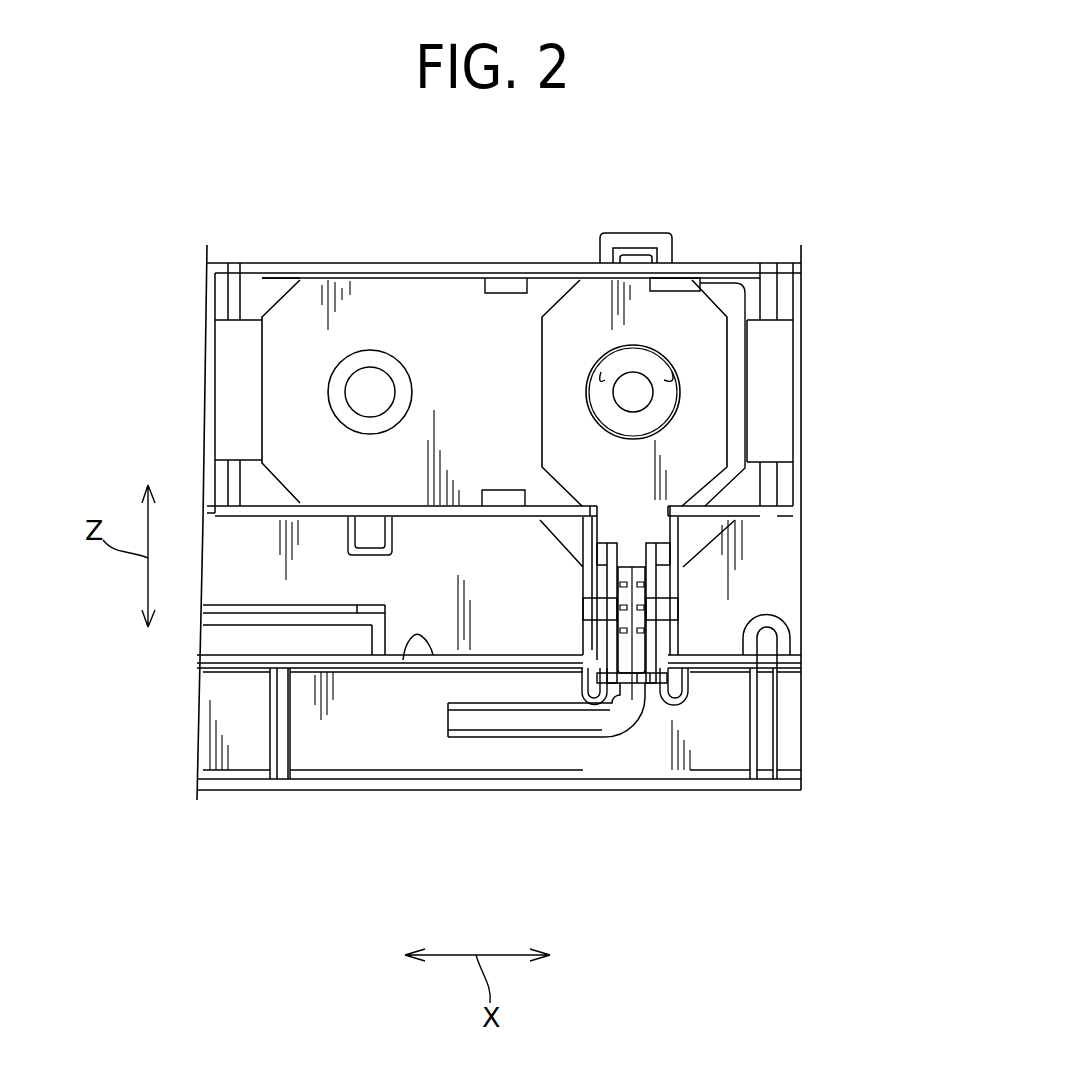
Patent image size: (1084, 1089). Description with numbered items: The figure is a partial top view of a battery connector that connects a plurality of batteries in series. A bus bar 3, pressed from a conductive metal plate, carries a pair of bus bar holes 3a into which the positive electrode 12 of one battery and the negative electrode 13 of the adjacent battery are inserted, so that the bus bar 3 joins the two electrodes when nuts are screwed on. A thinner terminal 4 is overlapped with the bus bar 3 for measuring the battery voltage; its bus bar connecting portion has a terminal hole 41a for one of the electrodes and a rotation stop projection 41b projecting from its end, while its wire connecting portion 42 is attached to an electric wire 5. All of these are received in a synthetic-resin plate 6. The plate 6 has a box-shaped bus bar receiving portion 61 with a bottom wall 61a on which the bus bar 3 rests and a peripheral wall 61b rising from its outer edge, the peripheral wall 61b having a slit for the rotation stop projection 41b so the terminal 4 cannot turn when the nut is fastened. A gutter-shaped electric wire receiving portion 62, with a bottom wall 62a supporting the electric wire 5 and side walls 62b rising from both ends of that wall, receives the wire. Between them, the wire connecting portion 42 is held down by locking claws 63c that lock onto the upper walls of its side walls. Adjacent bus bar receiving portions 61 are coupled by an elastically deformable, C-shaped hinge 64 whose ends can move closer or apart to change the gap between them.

The bus bar 3 is at (407, 295).
The bus bar holes 3a is at (347, 372).
The positive electrode 12 is at (370, 388).
The negative electrode 13 is at (632, 392).
The terminal hole 41a is at (673, 363).
The rotation stop projection 41b is at (640, 258).
The bus bar receiving portion 61 is at (727, 272).
The hinge 64 is at (240, 360).
The terminal 4 is at (700, 444).
The bottom wall 61a is at (728, 492).
The peripheral wall 61b is at (738, 518).
The wire connecting portion 42 is at (682, 590).
The locking claws 63c is at (600, 606).
The electric wire 5 is at (540, 723).
The plate 6 is at (250, 790).
The electric wire receiving portion 62 is at (653, 747).
The bottom wall 62a is at (423, 746).
The side walls 62b is at (348, 792).